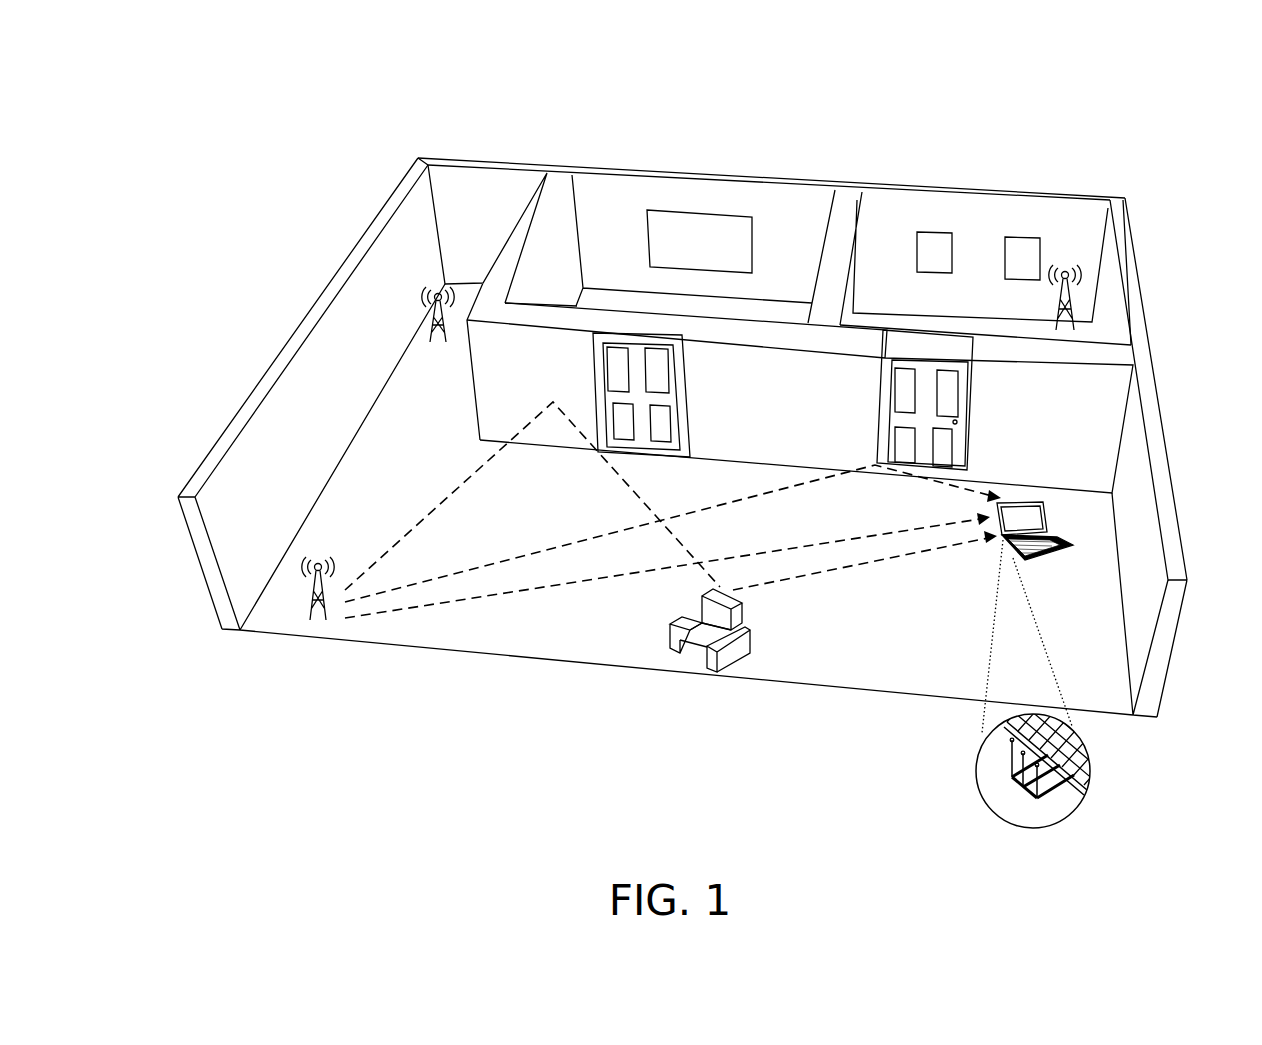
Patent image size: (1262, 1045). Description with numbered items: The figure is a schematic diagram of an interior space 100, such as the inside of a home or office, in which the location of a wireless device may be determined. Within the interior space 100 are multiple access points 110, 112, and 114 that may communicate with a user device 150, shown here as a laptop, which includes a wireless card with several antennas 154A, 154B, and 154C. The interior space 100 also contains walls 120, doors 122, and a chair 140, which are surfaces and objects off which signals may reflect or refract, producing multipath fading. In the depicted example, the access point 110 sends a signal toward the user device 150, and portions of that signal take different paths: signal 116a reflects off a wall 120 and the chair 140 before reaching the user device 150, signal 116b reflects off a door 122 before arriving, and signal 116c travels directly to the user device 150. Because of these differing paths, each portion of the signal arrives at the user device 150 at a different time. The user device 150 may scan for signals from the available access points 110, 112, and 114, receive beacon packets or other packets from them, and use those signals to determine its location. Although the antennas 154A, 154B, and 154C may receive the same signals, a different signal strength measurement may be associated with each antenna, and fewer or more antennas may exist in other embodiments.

The interior space 100 is at (1158, 66).
The access point 110 is at (313, 612).
The access point 112 is at (422, 297).
The access point 114 is at (1077, 268).
The signal 116a is at (398, 540).
The signal 116b is at (584, 545).
The signal 116c is at (508, 594).
The walls 120 is at (1043, 370).
The doors 122 is at (913, 420).
The chair 140 is at (703, 677).
The user device 150 is at (1043, 503).
The antenna 154A is at (1011, 773).
The antenna 154B is at (1023, 780).
The antenna 154C is at (1018, 785).